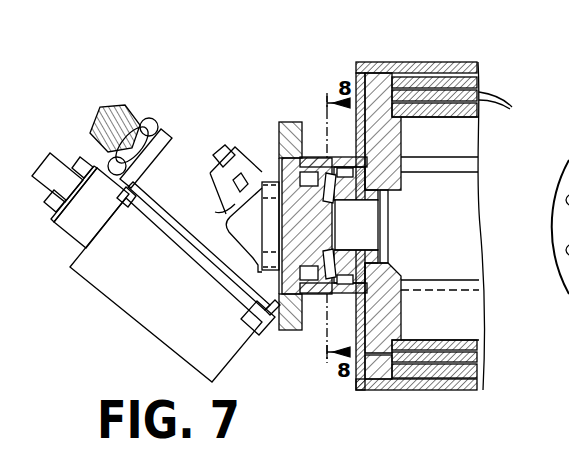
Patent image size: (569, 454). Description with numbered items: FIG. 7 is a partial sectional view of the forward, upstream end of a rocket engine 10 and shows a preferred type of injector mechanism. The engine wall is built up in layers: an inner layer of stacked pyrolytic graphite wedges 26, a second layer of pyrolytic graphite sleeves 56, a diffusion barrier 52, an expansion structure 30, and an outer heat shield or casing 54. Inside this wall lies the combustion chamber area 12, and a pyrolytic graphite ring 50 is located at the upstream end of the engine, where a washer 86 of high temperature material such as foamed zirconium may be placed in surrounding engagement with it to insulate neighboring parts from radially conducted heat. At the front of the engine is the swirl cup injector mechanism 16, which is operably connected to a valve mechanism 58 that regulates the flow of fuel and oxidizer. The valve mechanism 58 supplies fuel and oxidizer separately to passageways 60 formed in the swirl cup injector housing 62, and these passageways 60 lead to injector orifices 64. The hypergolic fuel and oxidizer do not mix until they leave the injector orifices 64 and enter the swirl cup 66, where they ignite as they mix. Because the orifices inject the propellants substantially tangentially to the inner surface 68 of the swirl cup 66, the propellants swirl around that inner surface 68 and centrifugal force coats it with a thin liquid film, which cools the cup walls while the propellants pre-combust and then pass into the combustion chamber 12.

The engine 10 is at (363, 50).
The combustion chamber 12 is at (463, 232).
The swirl cup injector mechanism 16 is at (285, 108).
The pyrolytic graphite wedges 26 is at (454, 147).
The expansion structure 30 is at (482, 74).
The pyrolytic graphite ring 50 is at (394, 313).
The diffusion barrier 52 is at (479, 90).
The outer heat shield or casing 54 is at (421, 63).
The pyrolytic graphite sleeves 56 is at (488, 110).
The valve mechanism 58 is at (156, 243).
The passageways 60 is at (279, 172).
The swirl cup injector housing 62 is at (318, 241).
The injector orifices 64 is at (332, 241).
The swirl cup 66 is at (363, 224).
The inner surface of the swirl cup 68 is at (375, 213).
The washer 86 is at (374, 376).